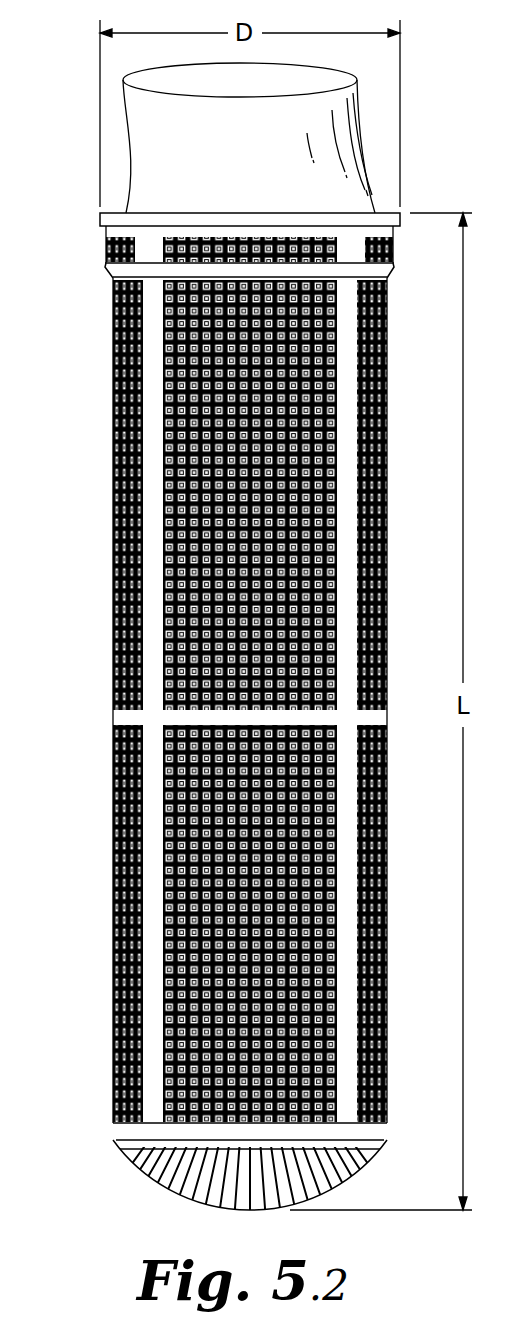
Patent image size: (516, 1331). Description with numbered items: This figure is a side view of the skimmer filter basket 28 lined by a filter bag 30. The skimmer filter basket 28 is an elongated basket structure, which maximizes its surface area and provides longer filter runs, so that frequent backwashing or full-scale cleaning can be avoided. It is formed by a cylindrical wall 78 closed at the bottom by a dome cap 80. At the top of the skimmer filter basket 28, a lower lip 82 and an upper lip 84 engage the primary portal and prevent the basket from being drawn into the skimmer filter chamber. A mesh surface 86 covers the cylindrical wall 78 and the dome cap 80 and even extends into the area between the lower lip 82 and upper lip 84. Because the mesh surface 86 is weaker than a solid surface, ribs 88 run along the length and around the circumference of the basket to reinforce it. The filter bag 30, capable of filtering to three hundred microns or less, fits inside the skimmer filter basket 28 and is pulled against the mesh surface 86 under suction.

The skimmer filter basket 28 is at (410, 137).
The filter bag 30 is at (162, 183).
The cylindrical wall 78 is at (96, 683).
The dome cap 80 is at (160, 1183).
The lower lip 82 is at (110, 271).
The upper lip 84 is at (401, 224).
The mesh surface 86 is at (125, 551).
The ribs 88 is at (347, 666).